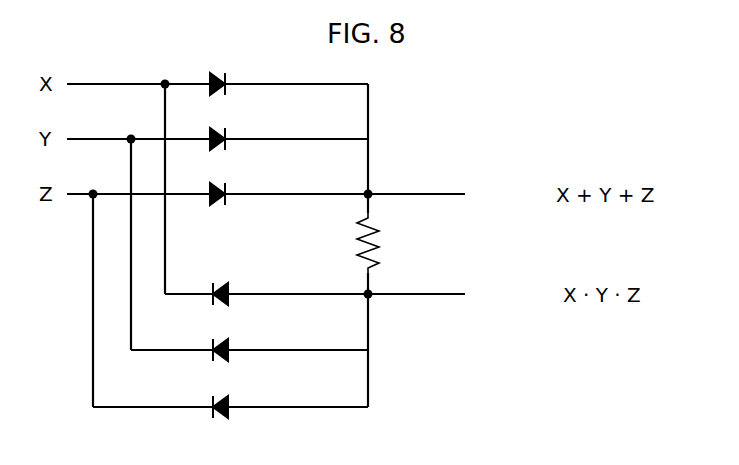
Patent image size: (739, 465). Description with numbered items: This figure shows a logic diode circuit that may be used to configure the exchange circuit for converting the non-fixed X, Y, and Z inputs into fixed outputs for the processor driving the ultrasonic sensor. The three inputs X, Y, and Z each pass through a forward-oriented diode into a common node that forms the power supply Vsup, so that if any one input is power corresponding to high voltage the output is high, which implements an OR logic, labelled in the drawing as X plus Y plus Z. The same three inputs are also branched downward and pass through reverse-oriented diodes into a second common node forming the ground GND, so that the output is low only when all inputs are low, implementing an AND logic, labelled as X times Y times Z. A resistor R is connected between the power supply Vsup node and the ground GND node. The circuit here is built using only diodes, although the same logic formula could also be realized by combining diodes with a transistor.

The resistor R is at (378, 243).
The power supply Vsup is at (447, 195).
The ground GND is at (445, 295).